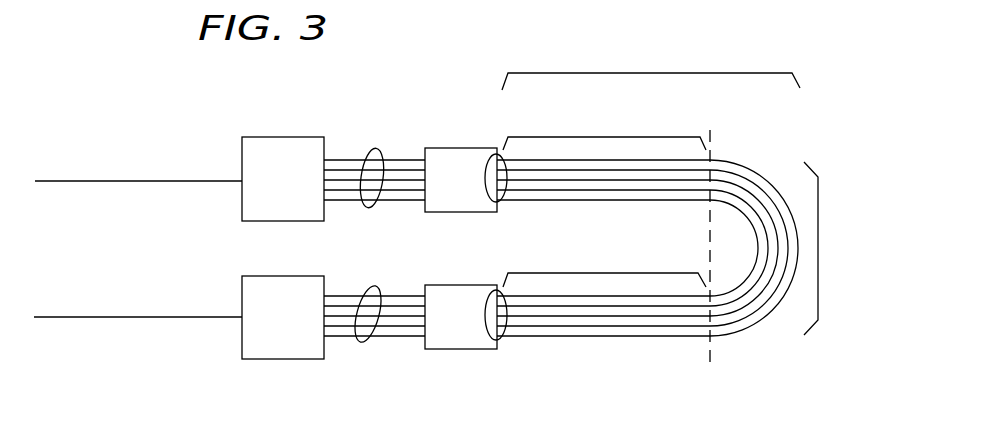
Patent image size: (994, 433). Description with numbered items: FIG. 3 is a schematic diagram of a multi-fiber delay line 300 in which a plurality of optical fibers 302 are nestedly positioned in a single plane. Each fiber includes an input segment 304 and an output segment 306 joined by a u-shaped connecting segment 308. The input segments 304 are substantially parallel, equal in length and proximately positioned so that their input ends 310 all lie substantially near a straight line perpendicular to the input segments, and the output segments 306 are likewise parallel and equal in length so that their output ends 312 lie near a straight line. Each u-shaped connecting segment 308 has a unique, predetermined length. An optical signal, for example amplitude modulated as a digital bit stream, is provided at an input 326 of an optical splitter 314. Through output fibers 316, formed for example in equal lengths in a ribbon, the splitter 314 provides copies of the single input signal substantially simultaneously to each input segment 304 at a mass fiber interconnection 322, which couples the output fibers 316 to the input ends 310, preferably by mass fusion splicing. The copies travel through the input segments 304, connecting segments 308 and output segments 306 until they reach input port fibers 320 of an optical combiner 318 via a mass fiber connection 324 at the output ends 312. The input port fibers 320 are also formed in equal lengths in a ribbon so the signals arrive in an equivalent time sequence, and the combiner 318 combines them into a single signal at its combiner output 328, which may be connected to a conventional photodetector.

The delay line 300 is at (267, 89).
The optical fibers 302 is at (655, 73).
The input segment 304 is at (605, 137).
The output segment 306 is at (607, 273).
The u-shaped connecting segment 308 is at (818, 248).
The input ends 310 is at (485, 178).
The output ends 312 is at (485, 315).
The optical splitter 314 is at (283, 221).
The output fibers 316 is at (375, 150).
The optical combiner 318 is at (283, 359).
The input port fibers 320 is at (358, 340).
The mass fiber interconnection 322 is at (465, 148).
The mass fiber connection 324 is at (463, 285).
The input 326 is at (240, 183).
The combiner output 328 is at (240, 318).